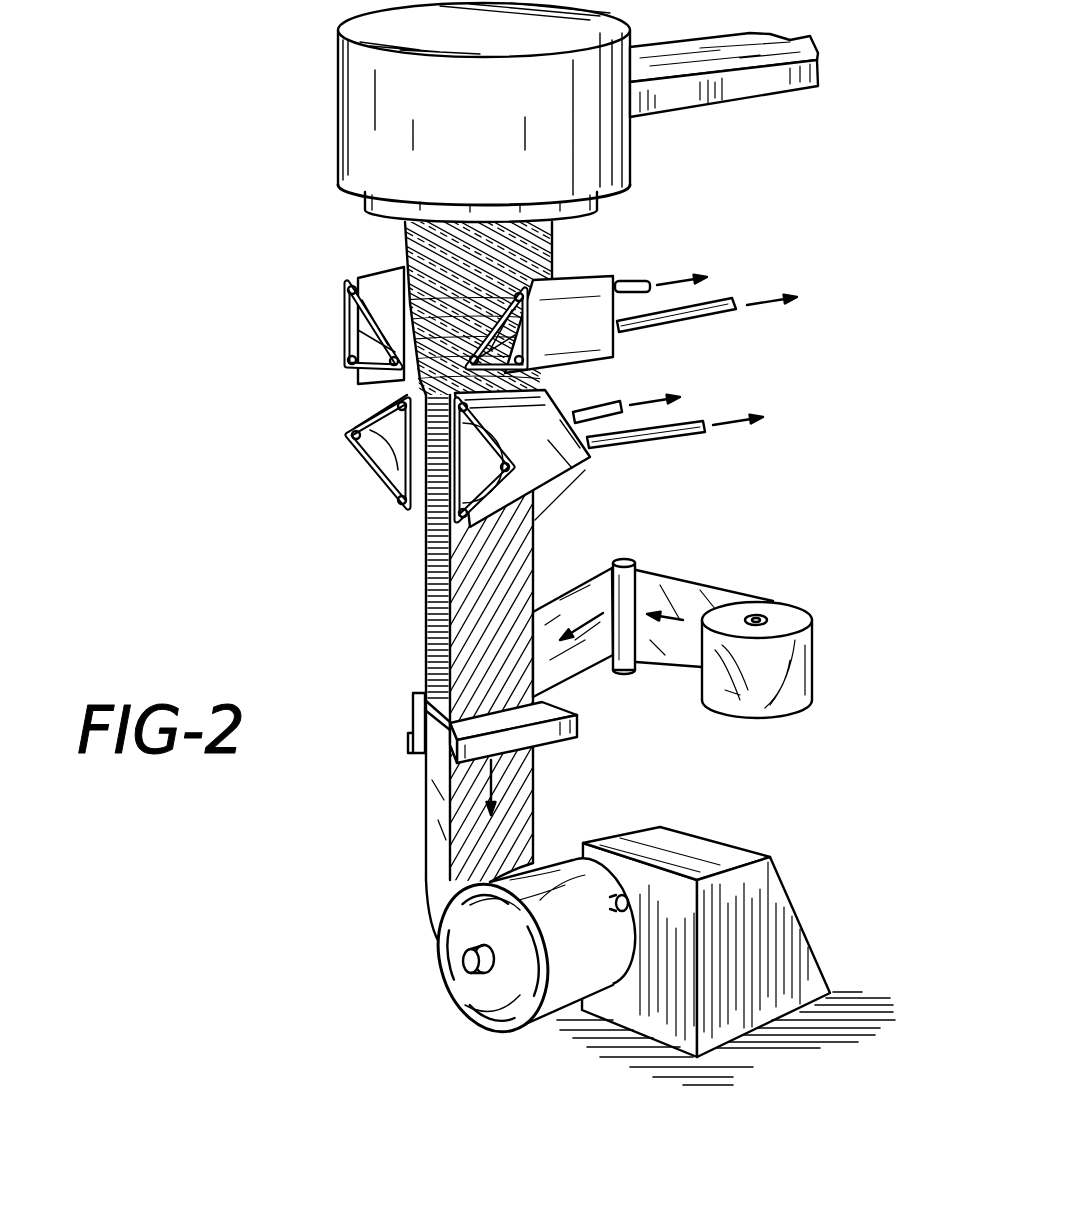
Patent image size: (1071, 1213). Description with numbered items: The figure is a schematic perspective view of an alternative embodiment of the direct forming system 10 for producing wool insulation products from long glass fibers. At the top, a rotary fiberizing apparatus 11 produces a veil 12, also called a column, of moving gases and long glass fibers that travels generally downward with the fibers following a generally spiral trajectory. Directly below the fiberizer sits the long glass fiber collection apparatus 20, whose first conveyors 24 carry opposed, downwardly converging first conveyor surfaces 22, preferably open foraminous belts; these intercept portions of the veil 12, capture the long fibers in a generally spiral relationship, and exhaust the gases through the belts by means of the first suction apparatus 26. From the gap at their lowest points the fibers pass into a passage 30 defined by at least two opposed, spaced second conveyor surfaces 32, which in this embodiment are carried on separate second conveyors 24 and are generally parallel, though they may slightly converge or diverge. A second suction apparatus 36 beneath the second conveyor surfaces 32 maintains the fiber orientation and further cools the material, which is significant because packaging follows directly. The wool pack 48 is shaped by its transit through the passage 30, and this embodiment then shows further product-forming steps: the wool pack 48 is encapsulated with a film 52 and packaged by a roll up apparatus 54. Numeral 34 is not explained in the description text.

The system 10 is at (224, 160).
The rotary fiberizing apparatus 11 is at (343, 188).
The veil 12 is at (571, 230).
The long glass fiber collection apparatus 20 is at (273, 414).
The first conveyor surfaces 22 is at (490, 325).
The first conveyors 24 is at (330, 270).
The first suction apparatus 26 is at (345, 320).
The passage 30 is at (416, 528).
The second conveyor surfaces 32 is at (398, 483).
The second belt guide blocks 34 is at (334, 456).
The second suction apparatus 36 is at (372, 410).
The wool pack 48 is at (424, 665).
The film 52 is at (805, 660).
The roll up apparatus 54 is at (457, 1000).